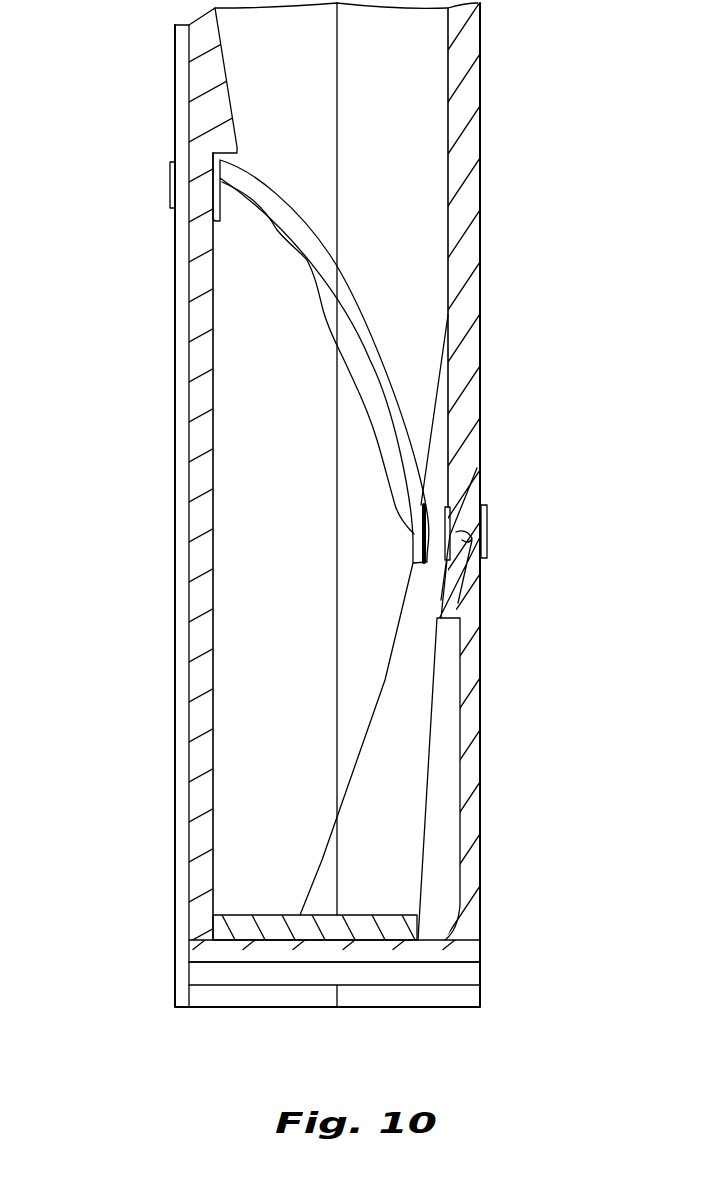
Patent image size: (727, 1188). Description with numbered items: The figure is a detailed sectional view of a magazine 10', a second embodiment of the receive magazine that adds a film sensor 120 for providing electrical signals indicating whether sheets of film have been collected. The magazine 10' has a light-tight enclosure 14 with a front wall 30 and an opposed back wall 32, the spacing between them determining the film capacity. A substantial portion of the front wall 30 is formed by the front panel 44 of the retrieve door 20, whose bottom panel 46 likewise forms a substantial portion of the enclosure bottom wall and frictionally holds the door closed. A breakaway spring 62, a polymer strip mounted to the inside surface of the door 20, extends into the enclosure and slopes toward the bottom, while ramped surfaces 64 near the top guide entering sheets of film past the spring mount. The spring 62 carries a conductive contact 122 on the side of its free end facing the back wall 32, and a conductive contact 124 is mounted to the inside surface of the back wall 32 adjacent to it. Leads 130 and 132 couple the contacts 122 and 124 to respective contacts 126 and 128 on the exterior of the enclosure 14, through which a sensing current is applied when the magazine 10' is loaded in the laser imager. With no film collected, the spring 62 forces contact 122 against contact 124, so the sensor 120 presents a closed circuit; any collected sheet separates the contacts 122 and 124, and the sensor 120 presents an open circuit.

The magazine 10' is at (329, 536).
The light-tight enclosure 14 is at (168, 982).
The retrieve door 20 is at (176, 492).
The front wall 30 is at (200, 278).
The back wall 32 is at (468, 262).
The front panel 44 is at (200, 624).
The bottom panel 46 is at (312, 947).
The breakaway spring 62 is at (353, 293).
The ramped surfaces 64 is at (222, 140).
The sensor 120 is at (582, 450).
The conductive contact 122 is at (462, 596).
The conductive contact 124 is at (452, 500).
The exterior contact 126 is at (170, 176).
The exterior contact 128 is at (487, 517).
The lead 130 is at (318, 301).
The lead 132 is at (484, 547).